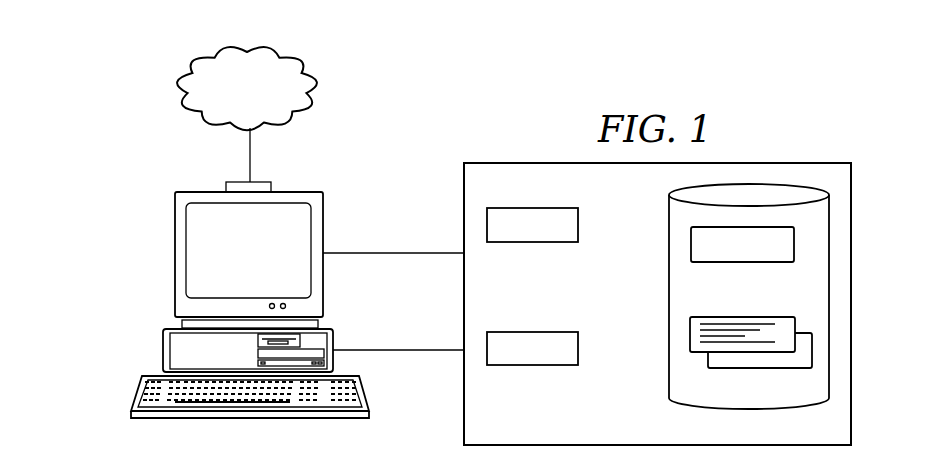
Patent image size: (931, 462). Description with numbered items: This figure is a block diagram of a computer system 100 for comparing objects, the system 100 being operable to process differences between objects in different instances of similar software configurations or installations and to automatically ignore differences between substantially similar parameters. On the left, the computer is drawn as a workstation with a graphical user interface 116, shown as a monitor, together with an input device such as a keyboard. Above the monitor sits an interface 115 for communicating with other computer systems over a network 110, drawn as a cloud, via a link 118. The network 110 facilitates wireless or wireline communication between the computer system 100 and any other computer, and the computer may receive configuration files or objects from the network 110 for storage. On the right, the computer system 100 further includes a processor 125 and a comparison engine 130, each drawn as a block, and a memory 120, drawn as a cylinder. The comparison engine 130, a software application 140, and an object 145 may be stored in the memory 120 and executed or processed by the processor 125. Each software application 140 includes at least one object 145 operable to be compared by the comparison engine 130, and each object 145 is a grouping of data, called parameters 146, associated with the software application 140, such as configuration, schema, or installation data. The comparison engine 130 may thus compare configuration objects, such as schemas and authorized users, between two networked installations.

The computer system 100 is at (100, 343).
The network 110 is at (268, 97).
The interface 115 is at (226, 186).
The graphical user interface 116 is at (268, 262).
The link 118 is at (251, 150).
The memory 120 is at (657, 360).
The processor 125 is at (515, 243).
The comparison engine 130 is at (550, 331).
The software application 140 is at (743, 263).
The object 145 is at (790, 369).
The parameter 146 is at (708, 317).